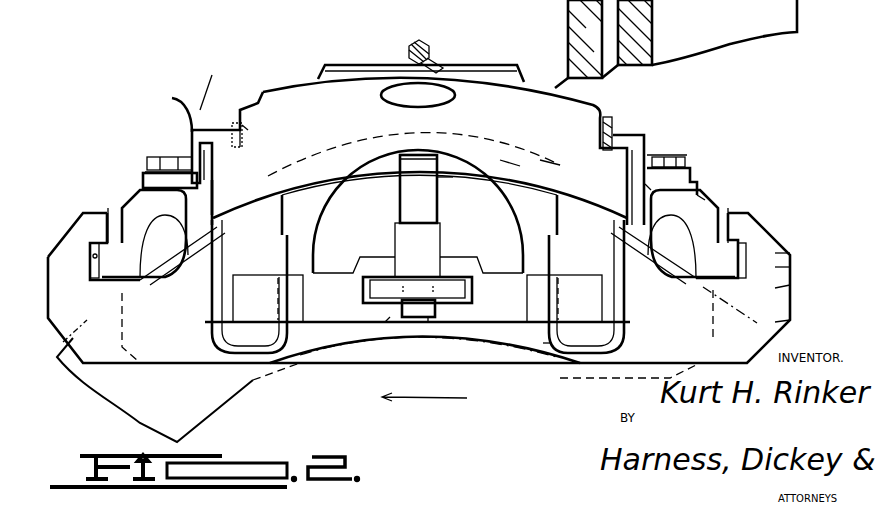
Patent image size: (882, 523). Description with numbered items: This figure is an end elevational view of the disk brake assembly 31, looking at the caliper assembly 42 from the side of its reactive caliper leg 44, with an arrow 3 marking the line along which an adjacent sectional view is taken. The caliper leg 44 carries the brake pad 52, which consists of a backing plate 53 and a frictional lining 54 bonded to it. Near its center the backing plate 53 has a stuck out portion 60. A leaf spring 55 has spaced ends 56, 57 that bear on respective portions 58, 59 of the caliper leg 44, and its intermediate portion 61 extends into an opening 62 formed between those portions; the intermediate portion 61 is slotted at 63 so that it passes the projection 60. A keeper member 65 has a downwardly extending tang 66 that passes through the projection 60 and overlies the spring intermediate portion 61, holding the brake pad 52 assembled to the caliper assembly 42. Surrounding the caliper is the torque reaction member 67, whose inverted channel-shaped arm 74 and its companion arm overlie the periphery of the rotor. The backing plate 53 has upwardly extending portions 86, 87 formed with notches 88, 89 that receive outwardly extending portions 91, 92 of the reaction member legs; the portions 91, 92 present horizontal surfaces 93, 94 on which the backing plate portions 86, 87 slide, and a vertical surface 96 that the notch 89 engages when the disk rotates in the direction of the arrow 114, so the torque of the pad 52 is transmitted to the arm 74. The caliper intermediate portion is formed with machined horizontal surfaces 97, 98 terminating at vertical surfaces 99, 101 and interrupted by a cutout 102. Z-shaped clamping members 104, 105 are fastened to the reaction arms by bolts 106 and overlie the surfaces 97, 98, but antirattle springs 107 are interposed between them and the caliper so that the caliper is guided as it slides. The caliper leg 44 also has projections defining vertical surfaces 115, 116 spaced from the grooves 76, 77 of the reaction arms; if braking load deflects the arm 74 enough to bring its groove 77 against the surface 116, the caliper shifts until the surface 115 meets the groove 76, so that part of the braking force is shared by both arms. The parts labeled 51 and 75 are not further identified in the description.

The bleeder screw 3 is at (418, 4).
The disk brake assembly 31 is at (202, 76).
The caliper assembly 42 is at (607, 108).
The caliper leg 44 is at (260, 343).
The bracket edge 51 is at (128, 293).
The brake pad 52 is at (786, 227).
The backing plate 53 is at (792, 288).
The frictional lining 54 is at (792, 322).
The leaf spring 55 is at (529, 285).
The spring end 56 is at (237, 302).
The spring end 57 is at (543, 343).
The caliper leg portion 58 is at (268, 235).
The caliper leg portion 59 is at (602, 286).
The stuck out portion 60 is at (438, 278).
The intermediate spring portion 61 is at (390, 318).
The opening 62 is at (498, 187).
The slot 63 is at (470, 296).
The keeper member 65 is at (453, 178).
The tang 66 is at (428, 318).
The torque reaction member 67 is at (708, 197).
The torque reaction member arm 74 is at (727, 197).
The left cylinder wall 75 is at (147, 163).
The groove 76 is at (214, 200).
The groove 77 is at (672, 245).
The upwardly extending portion 86 is at (98, 215).
The upwardly extending portion 87 is at (755, 208).
The notch 88 is at (88, 256).
The notch 89 is at (748, 253).
The outwardly extending portion 91 is at (182, 256).
The outwardly extending portion 92 is at (740, 272).
The horizontal surface 93 is at (124, 204).
The horizontal surface 94 is at (780, 227).
The vertical surface 96 is at (746, 267).
The machined horizontal surface 97 is at (239, 119).
The machined horizontal surface 98 is at (622, 130).
The machined vertical surface 99 is at (244, 130).
The machined vertical surface 101 is at (575, 110).
The cutout portion 102 is at (568, 158).
The clamping member 104 is at (172, 98).
The clamping member 105 is at (650, 150).
The bolt 106 is at (152, 156).
The antirattle spring 107 is at (245, 113).
The arrow 114 is at (467, 398).
The vertical surface 115 is at (262, 146).
The vertical surface 116 is at (628, 165).